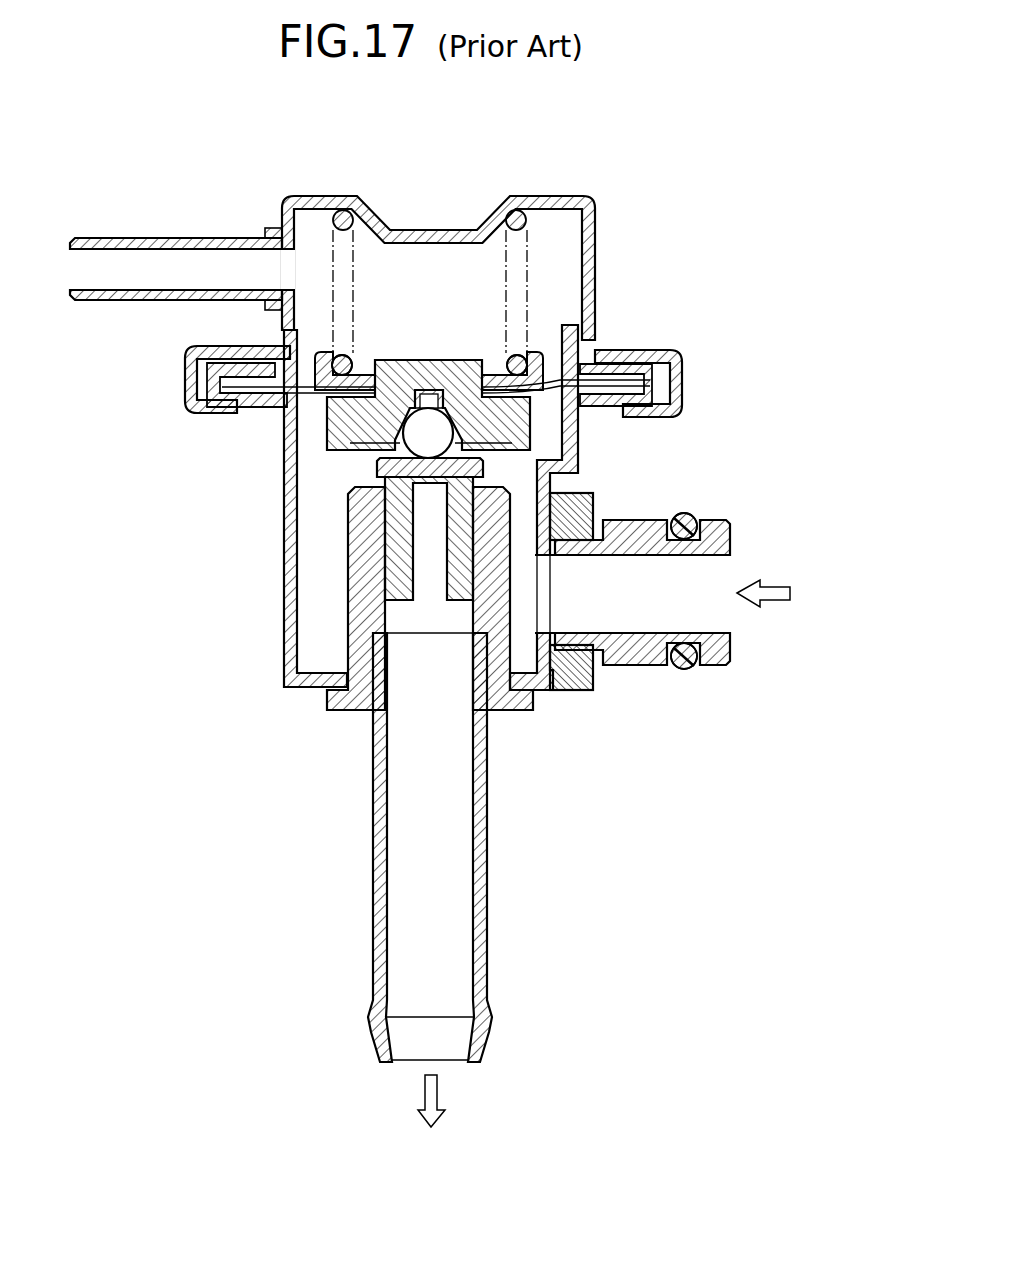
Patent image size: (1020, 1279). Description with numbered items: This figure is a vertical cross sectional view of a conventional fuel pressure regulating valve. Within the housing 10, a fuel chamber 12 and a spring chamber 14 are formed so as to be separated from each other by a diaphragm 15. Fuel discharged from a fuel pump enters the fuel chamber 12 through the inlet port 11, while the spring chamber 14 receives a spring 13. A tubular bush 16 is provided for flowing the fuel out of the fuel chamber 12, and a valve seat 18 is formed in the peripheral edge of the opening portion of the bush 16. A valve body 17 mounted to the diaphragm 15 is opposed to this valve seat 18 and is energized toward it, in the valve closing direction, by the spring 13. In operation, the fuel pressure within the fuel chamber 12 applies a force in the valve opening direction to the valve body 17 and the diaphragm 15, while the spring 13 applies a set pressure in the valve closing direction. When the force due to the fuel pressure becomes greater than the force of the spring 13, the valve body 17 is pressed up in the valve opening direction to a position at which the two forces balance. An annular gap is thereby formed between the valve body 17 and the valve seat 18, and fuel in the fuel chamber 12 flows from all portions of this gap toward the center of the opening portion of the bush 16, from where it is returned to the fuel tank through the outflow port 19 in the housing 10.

The housing 10 is at (630, 288).
The inlet port 11 is at (697, 578).
The fuel chamber 12 is at (513, 477).
The spring 13 is at (527, 233).
The spring chamber 14 is at (447, 265).
The diaphragm 15 is at (560, 380).
The tubular bush 16 is at (457, 514).
The valve body 17 is at (423, 483).
The valve seat 18 is at (380, 462).
The outflow port 19 is at (448, 1045).